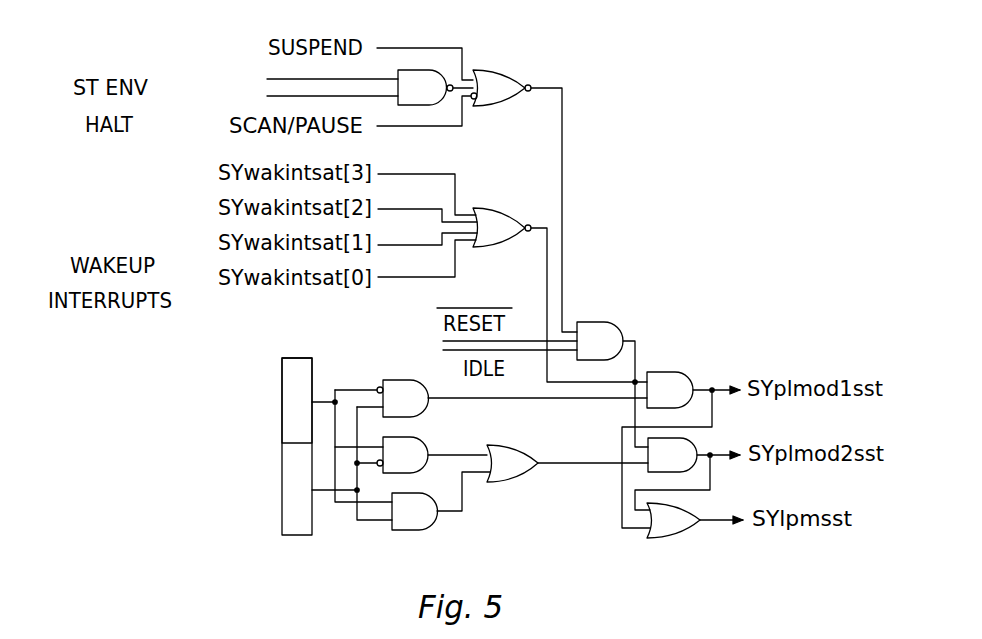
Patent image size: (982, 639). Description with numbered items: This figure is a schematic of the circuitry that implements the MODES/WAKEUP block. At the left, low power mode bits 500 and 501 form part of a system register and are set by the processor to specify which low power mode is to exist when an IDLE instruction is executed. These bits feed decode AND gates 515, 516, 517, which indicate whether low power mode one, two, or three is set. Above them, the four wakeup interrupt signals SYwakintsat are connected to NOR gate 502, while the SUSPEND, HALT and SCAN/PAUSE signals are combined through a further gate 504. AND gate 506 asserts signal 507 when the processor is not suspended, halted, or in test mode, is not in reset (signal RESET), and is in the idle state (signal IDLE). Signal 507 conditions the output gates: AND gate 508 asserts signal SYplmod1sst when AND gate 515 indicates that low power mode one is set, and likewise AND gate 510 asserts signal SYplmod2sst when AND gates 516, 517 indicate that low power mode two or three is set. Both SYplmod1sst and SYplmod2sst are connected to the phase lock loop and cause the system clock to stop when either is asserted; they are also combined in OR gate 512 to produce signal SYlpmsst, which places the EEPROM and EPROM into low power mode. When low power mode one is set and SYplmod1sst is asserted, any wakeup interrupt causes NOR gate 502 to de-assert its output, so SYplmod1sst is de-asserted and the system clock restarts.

The low power mode bit 500 is at (298, 535).
The low power mode bit 501 is at (297, 358).
The NOR gate 502 is at (510, 208).
The halt NOR gate 504 is at (510, 68).
The AND gate 506 is at (622, 325).
The signal 507 is at (640, 353).
The AND gate 508 is at (704, 352).
The AND gate 510 is at (693, 445).
The OR gate 512 is at (690, 540).
The AND gate 515 is at (395, 380).
The AND gate 516 is at (433, 440).
The AND gate 517 is at (437, 527).